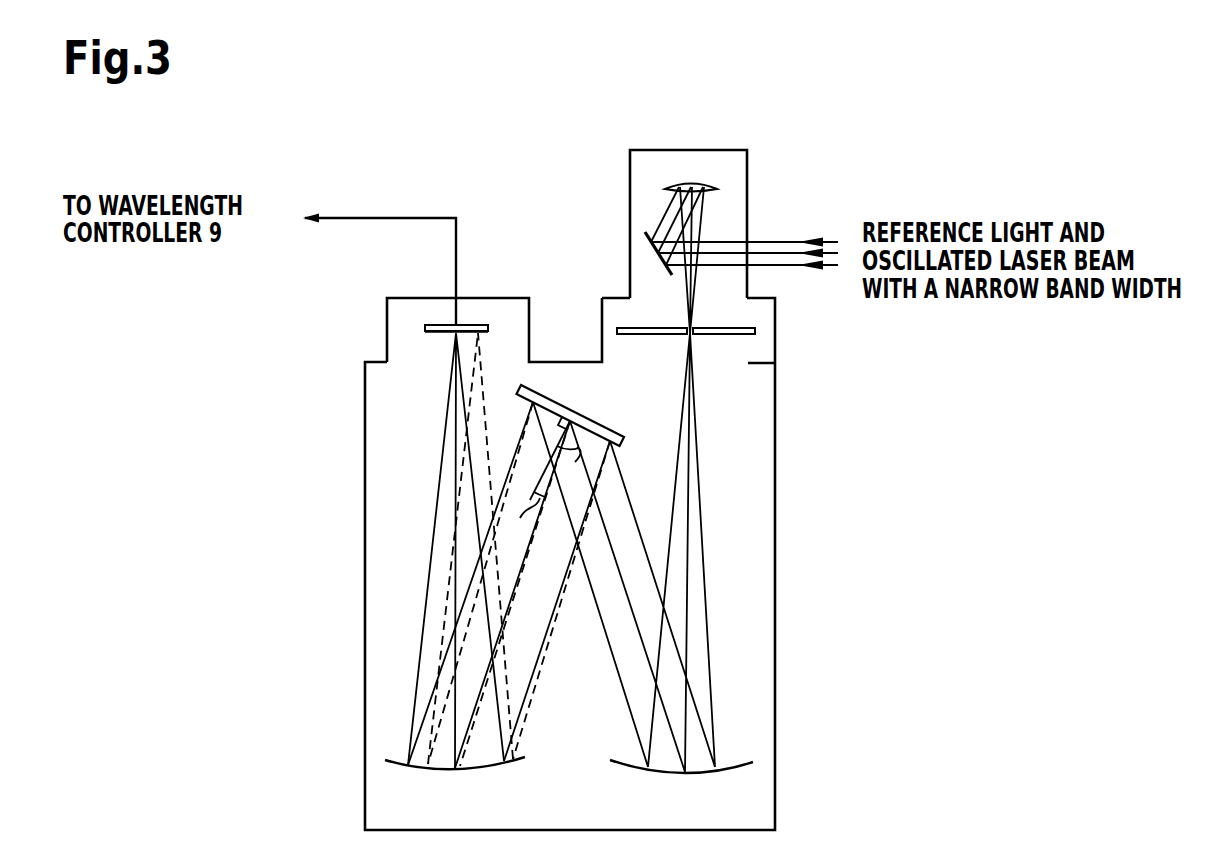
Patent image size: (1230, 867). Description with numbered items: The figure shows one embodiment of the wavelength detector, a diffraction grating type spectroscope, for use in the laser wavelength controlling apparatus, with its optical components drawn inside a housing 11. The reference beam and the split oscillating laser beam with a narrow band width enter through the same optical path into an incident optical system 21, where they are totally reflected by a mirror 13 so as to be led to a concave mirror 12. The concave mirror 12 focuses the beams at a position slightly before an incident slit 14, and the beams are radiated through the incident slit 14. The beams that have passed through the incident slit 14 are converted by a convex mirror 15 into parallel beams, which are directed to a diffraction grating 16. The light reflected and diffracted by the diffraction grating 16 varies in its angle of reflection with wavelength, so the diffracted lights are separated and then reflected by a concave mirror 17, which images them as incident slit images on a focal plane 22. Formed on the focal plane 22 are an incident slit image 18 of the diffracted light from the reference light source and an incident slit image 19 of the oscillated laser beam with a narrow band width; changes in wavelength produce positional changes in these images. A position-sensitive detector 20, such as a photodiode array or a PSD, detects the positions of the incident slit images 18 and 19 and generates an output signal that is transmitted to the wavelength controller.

The housing 11 is at (777, 448).
The concave mirror 12 is at (698, 182).
The mirror 13 is at (647, 244).
The incident slit 14 is at (695, 320).
The convex mirror 15 is at (640, 770).
The diffraction grating 16 is at (590, 413).
The concave mirror 17 is at (432, 772).
The incident slit image 18 is at (450, 337).
The incident slit image 19 is at (480, 314).
The position-sensitive detector 20 is at (437, 323).
The incident optical system 21 is at (748, 190).
The focal plane 22 is at (423, 332).